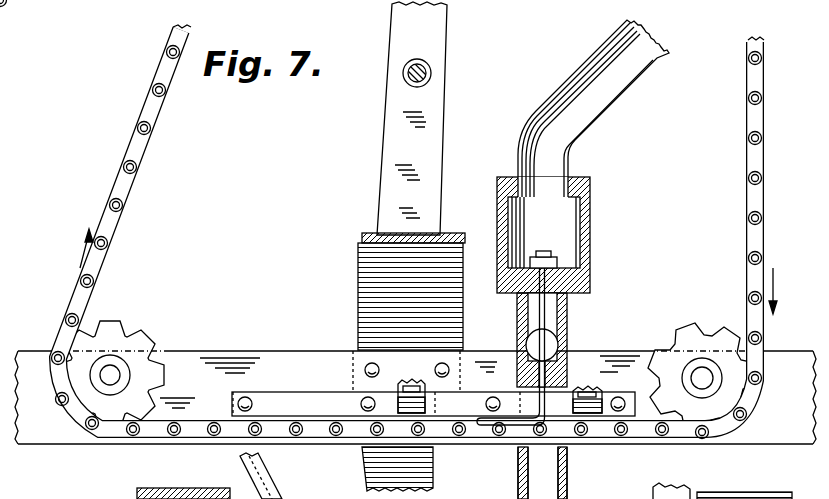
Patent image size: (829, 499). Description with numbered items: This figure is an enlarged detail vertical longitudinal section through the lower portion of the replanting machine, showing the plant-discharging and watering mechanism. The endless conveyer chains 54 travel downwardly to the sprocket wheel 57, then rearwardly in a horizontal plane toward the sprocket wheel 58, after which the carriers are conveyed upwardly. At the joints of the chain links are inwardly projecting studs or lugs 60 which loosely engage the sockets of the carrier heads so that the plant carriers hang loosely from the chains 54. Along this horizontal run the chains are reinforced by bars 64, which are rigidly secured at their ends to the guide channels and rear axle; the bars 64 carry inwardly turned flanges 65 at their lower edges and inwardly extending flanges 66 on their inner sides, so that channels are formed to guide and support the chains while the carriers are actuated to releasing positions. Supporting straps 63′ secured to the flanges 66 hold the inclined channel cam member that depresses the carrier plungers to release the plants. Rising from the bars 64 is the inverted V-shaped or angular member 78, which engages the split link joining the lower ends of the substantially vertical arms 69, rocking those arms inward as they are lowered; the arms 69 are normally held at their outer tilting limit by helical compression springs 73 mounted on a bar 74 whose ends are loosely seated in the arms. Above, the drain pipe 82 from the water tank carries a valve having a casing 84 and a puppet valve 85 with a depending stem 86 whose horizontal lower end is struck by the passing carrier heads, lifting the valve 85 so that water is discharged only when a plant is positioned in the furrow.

The endless conveyer chains 54 is at (139, 153).
The sprocket wheel 57 is at (132, 340).
The sprocket wheel 58 is at (690, 338).
The studs or lugs 60 is at (136, 182).
The supporting straps 63′ is at (412, 383).
The bars 64 is at (268, 358).
The inwardly turned flanges 65 is at (594, 388).
The inwardly extending flanges 66 is at (298, 412).
The arms 69 is at (427, 38).
The helical compression springs 73 is at (430, 65).
The bar 74 is at (432, 72).
The inverted V-shaped or angular member 78 is at (372, 250).
The drain pipe 82 is at (588, 107).
The valve casing 84 is at (590, 238).
The puppet valve 85 is at (557, 265).
The valve stem 86 is at (542, 307).